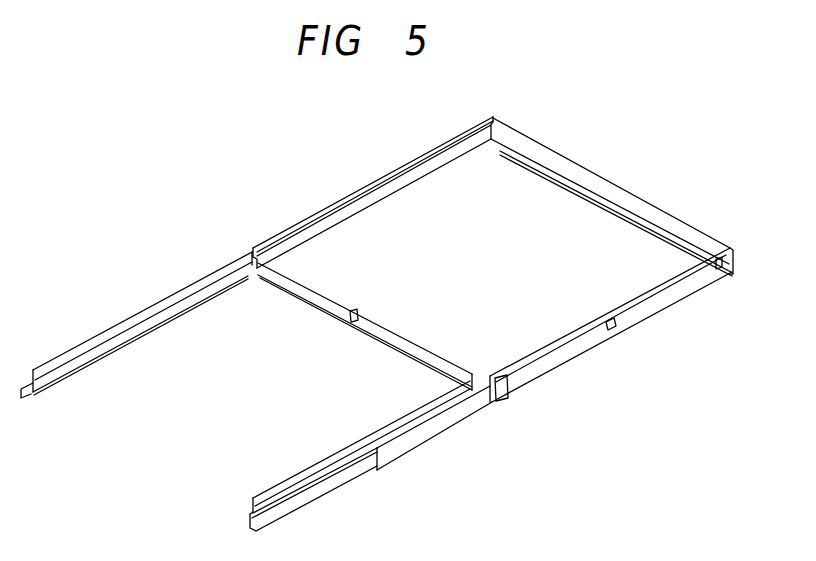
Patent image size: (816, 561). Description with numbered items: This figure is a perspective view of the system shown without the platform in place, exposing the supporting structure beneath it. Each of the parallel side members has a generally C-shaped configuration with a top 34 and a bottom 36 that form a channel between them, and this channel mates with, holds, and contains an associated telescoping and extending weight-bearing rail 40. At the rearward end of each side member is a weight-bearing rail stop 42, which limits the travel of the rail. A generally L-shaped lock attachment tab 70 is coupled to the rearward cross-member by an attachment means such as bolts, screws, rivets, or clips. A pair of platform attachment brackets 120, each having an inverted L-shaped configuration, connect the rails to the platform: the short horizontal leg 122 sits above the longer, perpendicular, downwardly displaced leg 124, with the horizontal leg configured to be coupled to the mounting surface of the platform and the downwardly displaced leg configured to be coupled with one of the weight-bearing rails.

The top 34 is at (478, 117).
The bottom 36 is at (430, 185).
The weight-bearing rail 40 is at (435, 432).
The weight-bearing rail stop 42 is at (504, 400).
The lock attachment tab 70 is at (352, 318).
The platform attachment bracket 120 is at (130, 310).
The short horizontal leg 122 is at (215, 268).
The downwardly displaced leg 124 is at (67, 372).